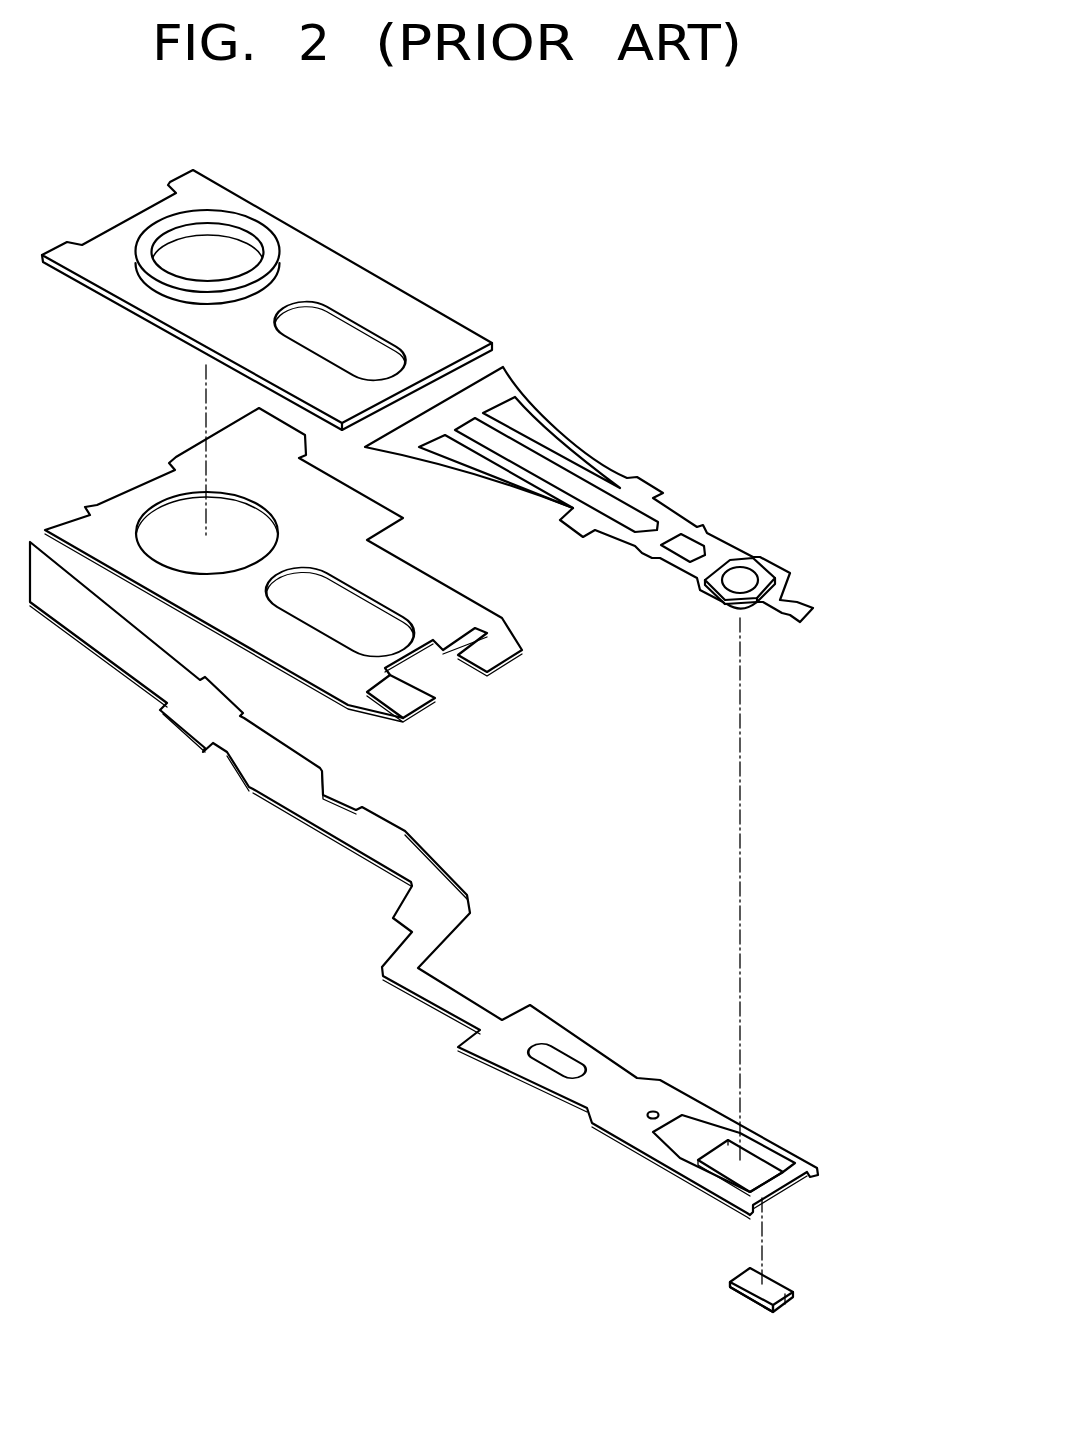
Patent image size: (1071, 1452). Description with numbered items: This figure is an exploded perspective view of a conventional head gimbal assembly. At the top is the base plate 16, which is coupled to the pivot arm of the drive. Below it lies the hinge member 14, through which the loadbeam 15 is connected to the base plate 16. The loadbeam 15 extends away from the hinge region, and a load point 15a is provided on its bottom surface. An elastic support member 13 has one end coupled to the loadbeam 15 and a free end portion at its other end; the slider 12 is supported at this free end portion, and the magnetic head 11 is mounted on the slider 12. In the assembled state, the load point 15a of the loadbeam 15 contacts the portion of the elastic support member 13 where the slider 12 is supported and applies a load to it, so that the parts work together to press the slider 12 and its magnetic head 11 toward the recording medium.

The magnetic head 11 is at (787, 1307).
The slider 12 is at (738, 1293).
The elastic support member 13 is at (557, 1027).
The hinge member 14 is at (135, 493).
The loadbeam 15 is at (577, 452).
The load point 15a is at (750, 612).
The base plate 16 is at (338, 262).